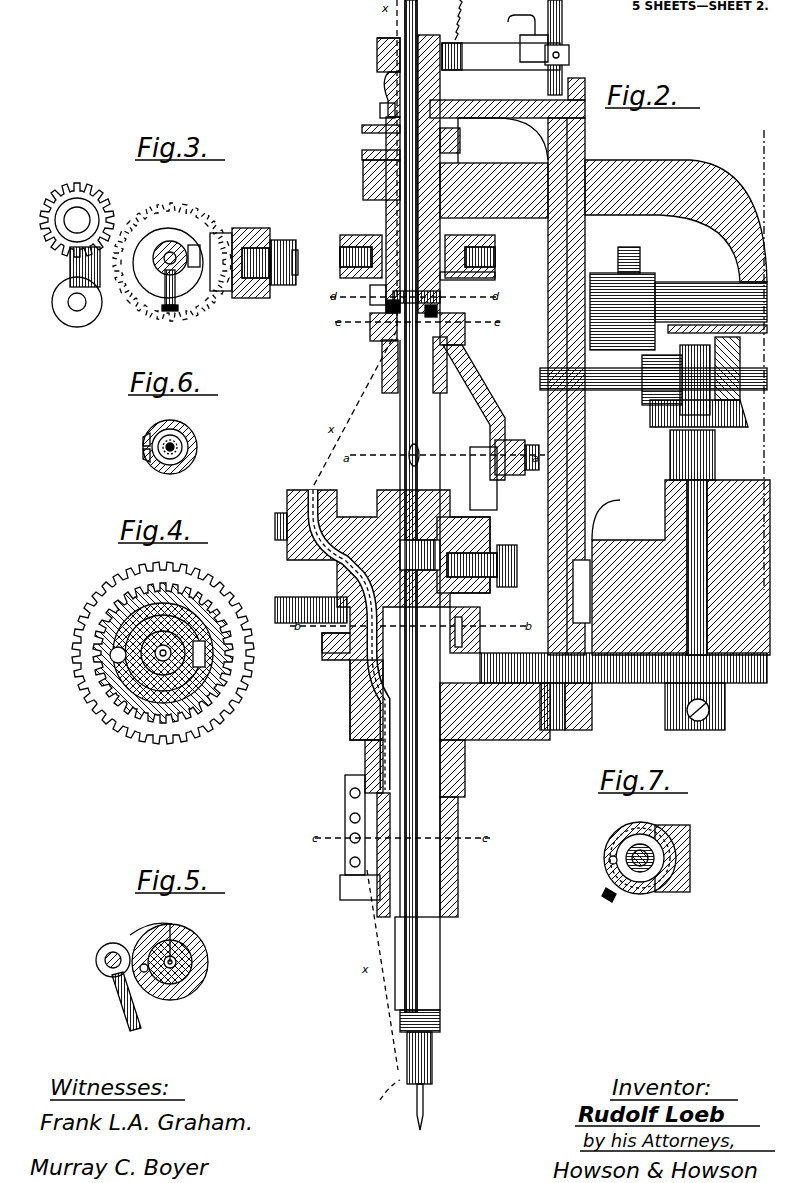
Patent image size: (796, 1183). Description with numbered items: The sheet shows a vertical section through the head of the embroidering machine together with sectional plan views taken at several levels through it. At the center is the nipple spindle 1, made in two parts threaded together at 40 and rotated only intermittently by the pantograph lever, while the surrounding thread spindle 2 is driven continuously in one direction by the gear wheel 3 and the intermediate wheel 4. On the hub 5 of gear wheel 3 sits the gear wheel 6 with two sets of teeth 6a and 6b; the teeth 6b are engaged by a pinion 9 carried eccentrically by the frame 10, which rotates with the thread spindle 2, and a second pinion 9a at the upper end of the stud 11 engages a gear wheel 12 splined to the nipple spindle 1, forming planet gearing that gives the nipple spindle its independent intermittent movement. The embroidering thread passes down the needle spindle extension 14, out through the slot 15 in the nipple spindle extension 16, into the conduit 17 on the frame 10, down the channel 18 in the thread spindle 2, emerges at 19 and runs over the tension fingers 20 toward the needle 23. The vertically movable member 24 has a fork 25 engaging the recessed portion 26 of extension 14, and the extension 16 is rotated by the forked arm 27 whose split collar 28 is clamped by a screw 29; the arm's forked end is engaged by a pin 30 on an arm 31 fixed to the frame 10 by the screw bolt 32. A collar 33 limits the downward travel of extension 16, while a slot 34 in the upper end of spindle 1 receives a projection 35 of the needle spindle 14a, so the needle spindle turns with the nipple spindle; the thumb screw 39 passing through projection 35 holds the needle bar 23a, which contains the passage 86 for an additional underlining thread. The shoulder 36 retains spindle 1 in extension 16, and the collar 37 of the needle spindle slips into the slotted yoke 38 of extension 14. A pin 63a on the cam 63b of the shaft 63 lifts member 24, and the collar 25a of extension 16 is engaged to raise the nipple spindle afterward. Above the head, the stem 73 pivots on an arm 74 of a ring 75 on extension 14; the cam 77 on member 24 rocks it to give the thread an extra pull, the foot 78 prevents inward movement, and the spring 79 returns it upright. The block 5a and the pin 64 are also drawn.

In FIG. 2, the nipple spindle 1 is at (417, 735).
In FIG. 3, the nipple spindle 1 is at (168, 263).
In FIG. 4, the nipple spindle 1 is at (178, 700).
In FIG. 5, the nipple spindle 1 is at (185, 992).
In FIG. 2, the thread spindle 2 is at (465, 752).
In FIG. 4, the thread spindle 2 is at (120, 610).
In FIG. 5, the thread spindle 2 is at (208, 958).
In FIG. 2, the gear wheel 3 is at (350, 679).
In FIG. 2, the intermediate wheel 4 is at (623, 659).
In FIG. 2, the hub 5 is at (480, 604).
In FIG. 4, the hub 5 is at (195, 615).
In FIG. 2, the set screw block 5a is at (644, 706).
In FIG. 2, the gear wheel 6 is at (323, 651).
In FIG. 4, the gear wheel 6 is at (160, 653).
In FIG. 2, the teeth 6a is at (515, 637).
In FIG. 4, the teeth 6a is at (169, 653).
In FIG. 2, the teeth 6b is at (462, 620).
In FIG. 4, the teeth 6b is at (163, 650).
In FIG. 2, the pinion 9 is at (304, 610).
In FIG. 2, the pinion 9a is at (275, 525).
In FIG. 3, the pinion 9a is at (69, 220).
In FIG. 2, the frame 10 is at (490, 540).
In FIG. 3, the frame 10 is at (70, 268).
In FIG. 3, the stud 11 is at (77, 222).
In FIG. 2, the gear wheel 12 is at (388, 615).
In FIG. 3, the gear wheel 12 is at (172, 262).
In FIG. 2, the needle spindle extension 14 is at (440, 142).
In FIG. 2, the needle spindle 14a is at (437, 311).
In FIG. 3, the needle spindle 14a is at (147, 277).
In FIG. 6, the needle spindle 14a is at (158, 462).
In FIG. 7, the needle spindle 14a is at (668, 830).
In FIG. 2, the slot 15 is at (370, 294).
In FIG. 6, the slot 15 is at (137, 451).
In FIG. 2, the nipple spindle extension 16 is at (382, 226).
In FIG. 6, the nipple spindle extension 16 is at (170, 454).
In FIG. 7, the nipple spindle extension 16 is at (660, 893).
In FIG. 2, the channel or conduit 17 is at (344, 640).
In FIG. 3, the channel or conduit 17 is at (77, 302).
In FIG. 4, the channel or conduit 17 is at (118, 655).
In FIG. 2, the channel 18 is at (367, 827).
In FIG. 5, the channel 18 is at (132, 940).
In FIG. 2, the channel outlet 19 is at (356, 894).
In FIG. 2, the fingers 20 is at (345, 796).
In FIG. 5, the fingers 20 is at (122, 1003).
In FIG. 2, the needle 23 is at (423, 1112).
In FIG. 6, the needle 23 is at (152, 435).
In FIG. 3, the needle bar 23a is at (179, 251).
In FIG. 5, the needle bar 23a is at (173, 937).
In FIG. 2, the vertically movable member 24 is at (605, 386).
In FIG. 2, the fork 25 is at (380, 111).
In FIG. 7, the fork 25 is at (655, 870).
In FIG. 2, the collar 25a is at (362, 129).
In FIG. 2, the recessed portion 26 is at (442, 110).
In FIG. 2, the forked arm 27 is at (472, 380).
In FIG. 2, the collar 28 is at (370, 334).
In FIG. 7, the collar 28 is at (610, 838).
In FIG. 7, the screw 29 is at (600, 896).
In FIG. 2, the pin 30 is at (517, 457).
In FIG. 3, the pin 30 is at (265, 263).
In FIG. 2, the arm 31 is at (483, 478).
In FIG. 2, the screw bolt 32 is at (497, 568).
In FIG. 2, the collar 33 is at (383, 375).
In FIG. 2, the slot 34 is at (420, 398).
In FIG. 2, the projection 35 is at (405, 430).
In FIG. 3, the projection 35 is at (154, 292).
In FIG. 2, the shoulder or collar 36 is at (445, 330).
In FIG. 3, the shoulder or collar 36 is at (163, 255).
In FIG. 6, the shoulder or collar 36 is at (190, 460).
In FIG. 7, the shoulder or collar 36 is at (609, 858).
In FIG. 2, the collar or shoulder 37 is at (386, 306).
In FIG. 2, the slotted yoke 38 is at (440, 297).
In FIG. 6, the slotted yoke 38 is at (180, 438).
In FIG. 2, the thumb screw 39 is at (420, 455).
In FIG. 3, the thumb screw 39 is at (165, 300).
In FIG. 2, the threaded connection 40 is at (418, 568).
In FIG. 2, the shaft 63 is at (711, 302).
In FIG. 2, the pin 63a is at (548, 338).
In FIG. 2, the cam 63b is at (622, 298).
In FIG. 7, the pin 64 is at (640, 895).
In FIG. 2, the stem 73 is at (562, 12).
In FIG. 2, the arm 74 is at (501, 56).
In FIG. 2, the ring 75 is at (377, 50).
In FIG. 2, the cam 77 is at (583, 82).
In FIG. 2, the foot 78 is at (520, 22).
In FIG. 2, the spring 79 is at (467, 20).
In FIG. 2, the passage 86 is at (418, 13).
In FIG. 6, the passage 86 is at (175, 447).
In FIG. 5, the passage 86 is at (205, 975).
In FIG. 7, the passage 86 is at (640, 832).